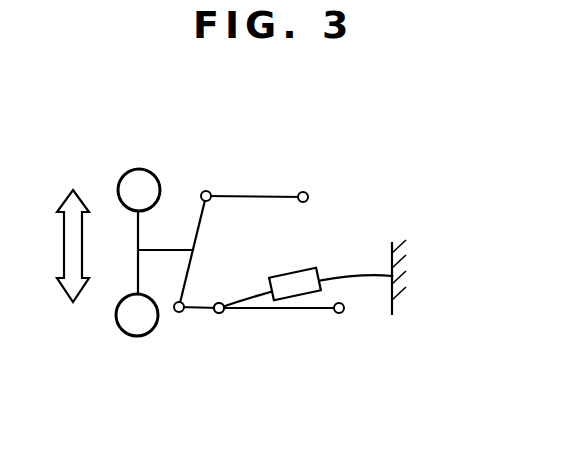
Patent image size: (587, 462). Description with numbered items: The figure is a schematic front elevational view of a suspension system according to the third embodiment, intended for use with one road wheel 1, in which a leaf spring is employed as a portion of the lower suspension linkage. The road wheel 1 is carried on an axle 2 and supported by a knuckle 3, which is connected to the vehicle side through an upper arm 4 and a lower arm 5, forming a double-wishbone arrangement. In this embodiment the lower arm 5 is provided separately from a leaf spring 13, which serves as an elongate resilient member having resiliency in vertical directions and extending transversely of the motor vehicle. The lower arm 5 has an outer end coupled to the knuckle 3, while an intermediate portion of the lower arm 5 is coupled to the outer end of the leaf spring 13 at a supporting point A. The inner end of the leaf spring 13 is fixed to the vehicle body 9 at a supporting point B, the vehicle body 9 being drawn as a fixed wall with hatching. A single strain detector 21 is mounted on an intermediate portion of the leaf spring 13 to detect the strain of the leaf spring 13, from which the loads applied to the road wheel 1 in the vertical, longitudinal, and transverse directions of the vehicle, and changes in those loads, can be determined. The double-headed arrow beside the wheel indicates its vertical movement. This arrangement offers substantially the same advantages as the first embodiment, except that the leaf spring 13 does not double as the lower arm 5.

The road wheel 1 is at (125, 174).
The axle 2 is at (163, 248).
The knuckle 3 is at (197, 238).
The upper arm 4 is at (250, 195).
The lower arm 5 is at (265, 310).
The leaf spring 13 is at (367, 275).
The strain detector 21 is at (291, 271).
The vehicle body 9 is at (402, 268).
The supporting point A is at (218, 315).
The supporting point B is at (392, 278).